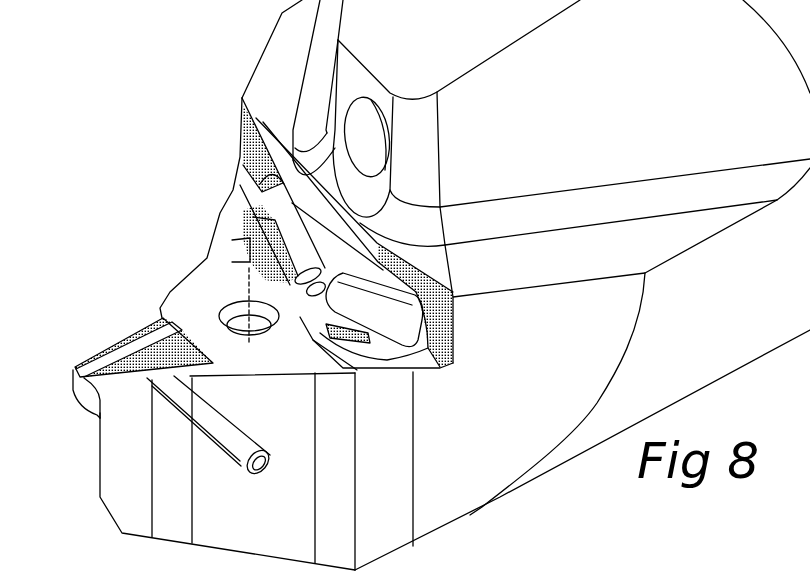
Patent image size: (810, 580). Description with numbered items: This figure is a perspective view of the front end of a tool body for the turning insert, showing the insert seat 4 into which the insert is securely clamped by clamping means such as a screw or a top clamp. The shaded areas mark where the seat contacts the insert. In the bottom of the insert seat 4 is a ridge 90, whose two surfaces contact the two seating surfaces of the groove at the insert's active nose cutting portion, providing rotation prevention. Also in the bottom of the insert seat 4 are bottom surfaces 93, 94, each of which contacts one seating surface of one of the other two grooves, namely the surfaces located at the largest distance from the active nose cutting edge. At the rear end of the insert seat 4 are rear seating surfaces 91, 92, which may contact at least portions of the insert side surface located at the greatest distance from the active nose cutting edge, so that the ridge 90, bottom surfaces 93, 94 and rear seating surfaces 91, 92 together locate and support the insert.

The insert seat 4 is at (122, 253).
The ridge 90 is at (117, 347).
The rear seating surface 91 is at (250, 158).
The rear seating surface 92 is at (437, 327).
The bottom surface 93 is at (252, 238).
The bottom surface 94 is at (367, 328).